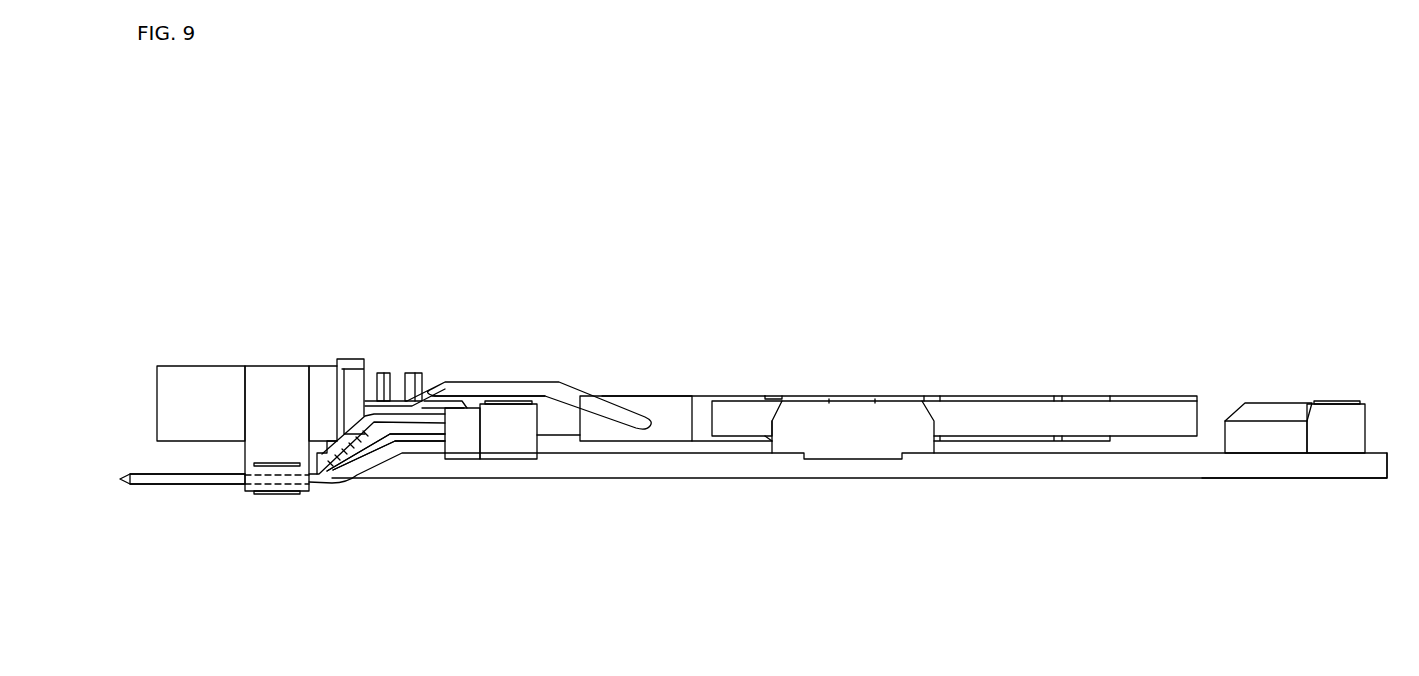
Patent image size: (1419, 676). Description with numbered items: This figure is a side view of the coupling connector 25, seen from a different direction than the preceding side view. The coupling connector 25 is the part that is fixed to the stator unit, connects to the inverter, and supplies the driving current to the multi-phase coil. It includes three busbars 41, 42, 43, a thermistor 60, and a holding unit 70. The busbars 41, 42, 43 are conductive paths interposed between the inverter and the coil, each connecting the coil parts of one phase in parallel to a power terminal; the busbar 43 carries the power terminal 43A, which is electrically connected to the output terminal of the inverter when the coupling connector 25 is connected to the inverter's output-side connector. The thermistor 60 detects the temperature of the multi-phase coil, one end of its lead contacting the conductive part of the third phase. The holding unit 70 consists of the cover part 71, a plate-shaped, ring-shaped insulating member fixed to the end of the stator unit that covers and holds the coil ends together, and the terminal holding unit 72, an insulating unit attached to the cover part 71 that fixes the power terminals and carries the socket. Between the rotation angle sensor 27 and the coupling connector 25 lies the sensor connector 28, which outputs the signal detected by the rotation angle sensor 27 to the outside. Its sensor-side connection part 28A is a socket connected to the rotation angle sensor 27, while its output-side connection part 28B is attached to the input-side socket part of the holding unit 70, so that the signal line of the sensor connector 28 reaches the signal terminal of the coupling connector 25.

The coupling connector 25 is at (1288, 402).
The rotation angle sensor 27 is at (1027, 394).
The sensor connector 28 is at (503, 383).
The sensor-side connection part 28A is at (657, 393).
The output-side connection part 28B is at (353, 357).
The busbar 41 is at (433, 447).
The busbar 42 is at (410, 436).
The busbar 43 is at (208, 484).
The power terminal 43A is at (153, 484).
The thermistor 60 is at (335, 443).
The holding unit 70 is at (1250, 478).
The cover part 71 is at (1313, 478).
The terminal holding unit 72 is at (327, 522).